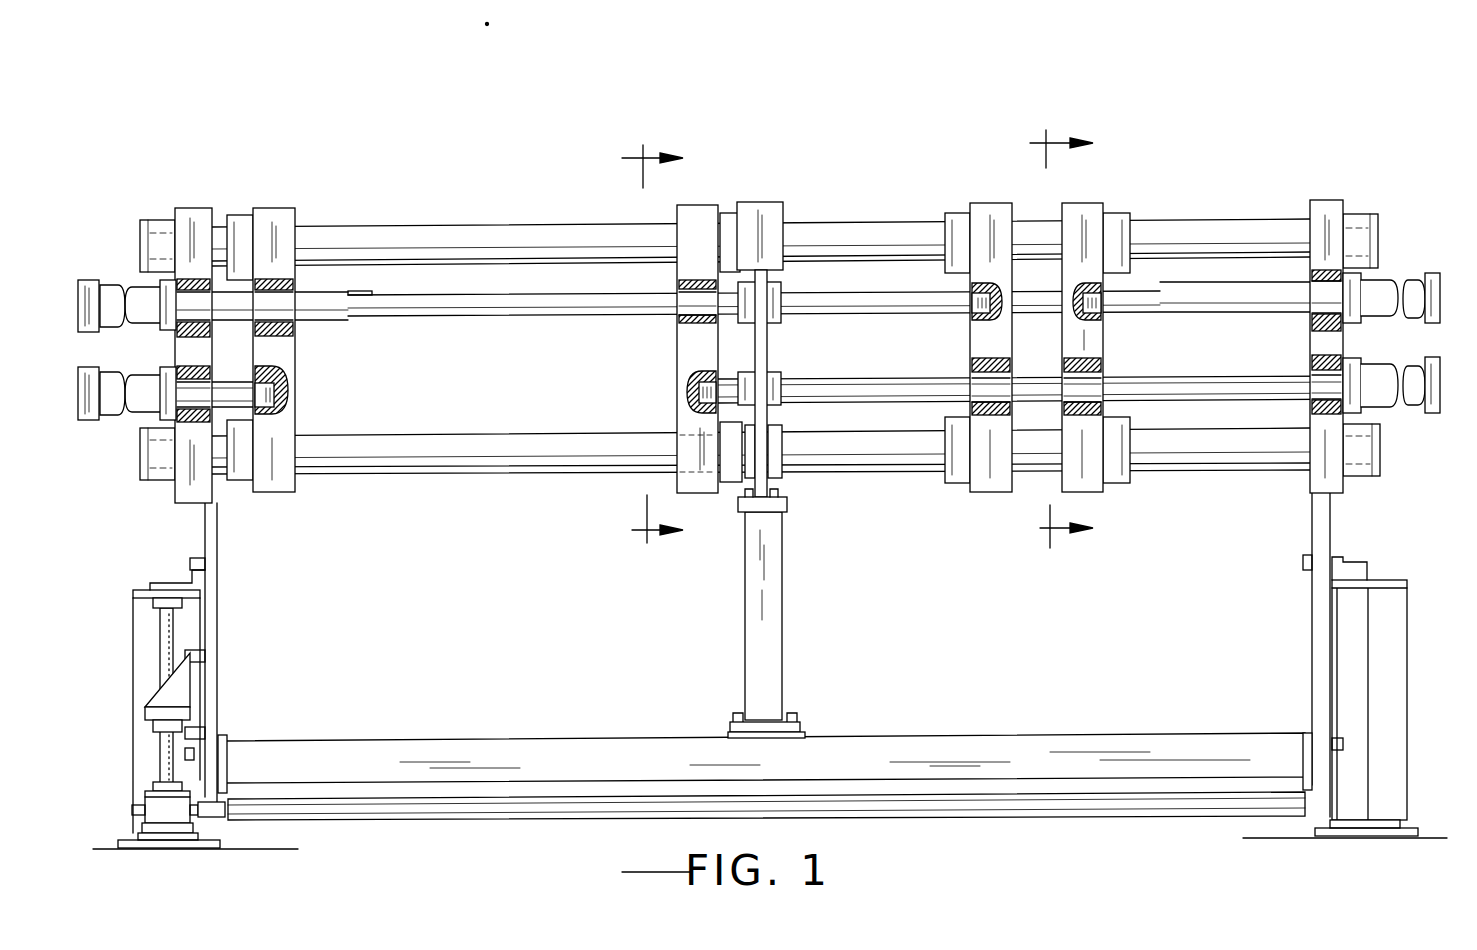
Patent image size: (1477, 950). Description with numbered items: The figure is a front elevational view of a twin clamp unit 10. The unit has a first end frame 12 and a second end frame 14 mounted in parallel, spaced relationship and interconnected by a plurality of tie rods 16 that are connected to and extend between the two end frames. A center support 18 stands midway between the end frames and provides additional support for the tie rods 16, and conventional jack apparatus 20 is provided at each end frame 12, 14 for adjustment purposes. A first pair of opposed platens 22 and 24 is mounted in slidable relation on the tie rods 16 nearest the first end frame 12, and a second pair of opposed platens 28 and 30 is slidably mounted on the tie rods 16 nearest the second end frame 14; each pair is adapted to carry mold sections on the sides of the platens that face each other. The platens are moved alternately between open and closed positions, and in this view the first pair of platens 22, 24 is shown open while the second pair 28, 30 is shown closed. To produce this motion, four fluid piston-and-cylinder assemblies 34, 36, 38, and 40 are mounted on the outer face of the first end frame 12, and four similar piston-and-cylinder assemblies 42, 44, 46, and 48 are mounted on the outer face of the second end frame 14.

The twin clamp unit 10 is at (767, 435).
The first end frame 12 is at (193, 210).
The second end frame 14 is at (1347, 168).
The tie rods 16 is at (440, 225).
The center support 18 is at (782, 565).
The jack apparatus 20 is at (138, 590).
The platen 22 is at (287, 208).
The platen 24 is at (677, 213).
The platen 28 is at (1000, 203).
The platen 30 is at (1087, 203).
The fluid piston-and-cylinder assembly 34 is at (146, 327).
The fluid piston-and-cylinder assembly 36 is at (140, 420).
The fluid piston-and-cylinder assembly 38 is at (115, 292).
The fluid piston-and-cylinder assembly 40 is at (107, 420).
The piston-and-cylinder assembly 42 is at (1418, 278).
The piston-and-cylinder assembly 44 is at (1420, 413).
The piston-and-cylinder assembly 46 is at (1393, 276).
The piston-and-cylinder assembly 48 is at (1375, 410).